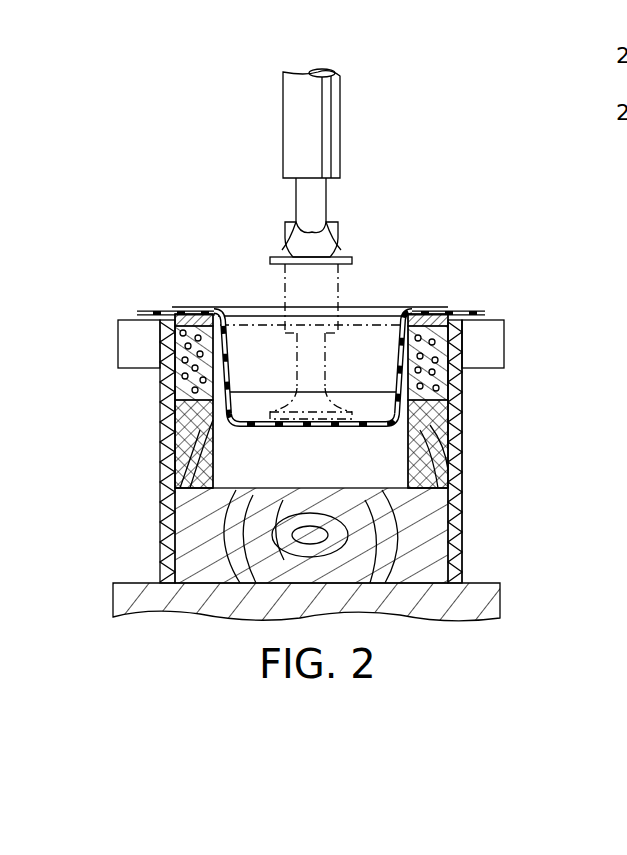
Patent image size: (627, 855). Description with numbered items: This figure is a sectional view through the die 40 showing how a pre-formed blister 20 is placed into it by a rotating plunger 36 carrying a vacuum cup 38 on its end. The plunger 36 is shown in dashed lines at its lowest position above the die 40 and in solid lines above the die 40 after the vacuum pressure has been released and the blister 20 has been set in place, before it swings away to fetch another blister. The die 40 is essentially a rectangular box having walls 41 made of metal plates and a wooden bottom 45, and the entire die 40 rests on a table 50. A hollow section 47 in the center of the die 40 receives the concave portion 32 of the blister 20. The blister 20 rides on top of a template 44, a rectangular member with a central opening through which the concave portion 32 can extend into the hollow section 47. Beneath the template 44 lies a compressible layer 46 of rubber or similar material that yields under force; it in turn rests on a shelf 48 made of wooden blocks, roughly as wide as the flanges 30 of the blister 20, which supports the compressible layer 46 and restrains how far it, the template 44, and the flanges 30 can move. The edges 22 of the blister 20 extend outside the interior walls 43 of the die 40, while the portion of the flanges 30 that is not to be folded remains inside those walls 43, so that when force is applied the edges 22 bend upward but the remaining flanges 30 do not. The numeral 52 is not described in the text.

The pre-formed blister 20 is at (448, 287).
The edges 22 is at (140, 311).
The flanges 30 is at (170, 312).
The concave portion 32 is at (297, 427).
The rotating plunger 36 is at (318, 128).
The vacuum cup 38 is at (322, 252).
The die 40 is at (462, 452).
The walls 41 is at (170, 508).
The interior walls 43 is at (440, 342).
The template 44 is at (232, 318).
The wooden bottom 45 is at (195, 554).
The compressible layer 46 is at (196, 378).
The hollow section 47 is at (200, 477).
The shelf 48 is at (195, 465).
The table 50 is at (480, 583).
The side wall 52 is at (464, 522).